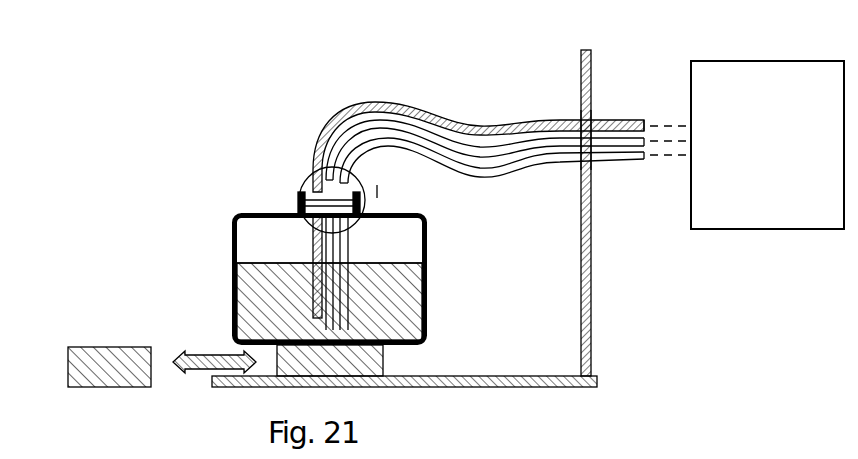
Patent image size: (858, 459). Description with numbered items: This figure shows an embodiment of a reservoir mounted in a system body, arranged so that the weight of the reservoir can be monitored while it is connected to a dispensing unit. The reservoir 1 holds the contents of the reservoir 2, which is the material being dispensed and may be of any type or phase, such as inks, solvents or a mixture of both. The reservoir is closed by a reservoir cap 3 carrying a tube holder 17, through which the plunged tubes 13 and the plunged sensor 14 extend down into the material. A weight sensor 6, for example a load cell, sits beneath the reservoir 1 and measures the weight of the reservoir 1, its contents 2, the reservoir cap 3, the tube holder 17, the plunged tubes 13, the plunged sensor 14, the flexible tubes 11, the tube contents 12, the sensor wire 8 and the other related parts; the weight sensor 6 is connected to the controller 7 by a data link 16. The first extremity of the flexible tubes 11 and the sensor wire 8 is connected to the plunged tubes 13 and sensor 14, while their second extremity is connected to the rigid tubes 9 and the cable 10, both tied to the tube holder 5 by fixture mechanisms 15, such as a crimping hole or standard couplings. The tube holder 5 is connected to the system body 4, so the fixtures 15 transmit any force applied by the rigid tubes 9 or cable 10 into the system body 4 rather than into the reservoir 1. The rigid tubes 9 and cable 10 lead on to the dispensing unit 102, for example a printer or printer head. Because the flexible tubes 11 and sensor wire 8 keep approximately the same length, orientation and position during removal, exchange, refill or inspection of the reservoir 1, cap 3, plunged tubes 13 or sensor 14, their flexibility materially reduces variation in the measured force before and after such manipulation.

The reservoir 1 is at (228, 226).
The contents of the reservoir 2 is at (258, 298).
The reservoir cap 3 is at (298, 191).
The system body 4 is at (527, 372).
The tube holder 5 is at (595, 300).
The weight sensor 6 is at (391, 367).
The controller 7 is at (82, 344).
The sensor wire 8 is at (483, 121).
The rigid tubes 9 is at (633, 161).
The cable 10 is at (627, 118).
The flexible tubes 11 is at (530, 168).
The tube contents 12 is at (467, 172).
The plunged tubes 13 is at (303, 238).
The plunged sensor 14 is at (310, 254).
The tube or cable fixture mechanisms 15 is at (593, 165).
The data link 16 is at (203, 370).
The tube holder 17 is at (314, 181).
The dispensing unit 102 is at (767, 145).